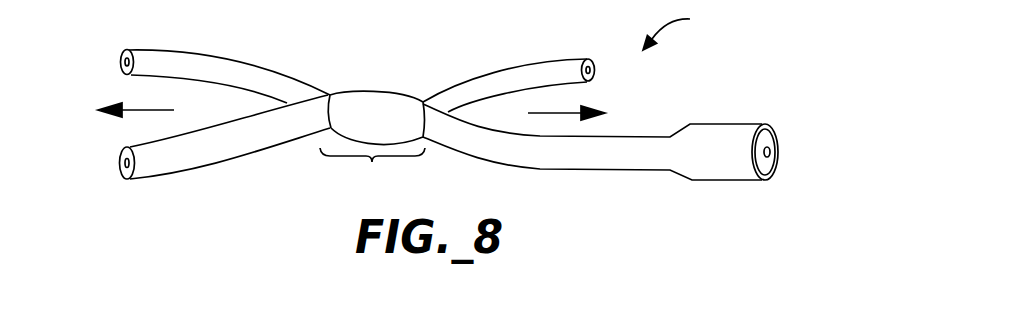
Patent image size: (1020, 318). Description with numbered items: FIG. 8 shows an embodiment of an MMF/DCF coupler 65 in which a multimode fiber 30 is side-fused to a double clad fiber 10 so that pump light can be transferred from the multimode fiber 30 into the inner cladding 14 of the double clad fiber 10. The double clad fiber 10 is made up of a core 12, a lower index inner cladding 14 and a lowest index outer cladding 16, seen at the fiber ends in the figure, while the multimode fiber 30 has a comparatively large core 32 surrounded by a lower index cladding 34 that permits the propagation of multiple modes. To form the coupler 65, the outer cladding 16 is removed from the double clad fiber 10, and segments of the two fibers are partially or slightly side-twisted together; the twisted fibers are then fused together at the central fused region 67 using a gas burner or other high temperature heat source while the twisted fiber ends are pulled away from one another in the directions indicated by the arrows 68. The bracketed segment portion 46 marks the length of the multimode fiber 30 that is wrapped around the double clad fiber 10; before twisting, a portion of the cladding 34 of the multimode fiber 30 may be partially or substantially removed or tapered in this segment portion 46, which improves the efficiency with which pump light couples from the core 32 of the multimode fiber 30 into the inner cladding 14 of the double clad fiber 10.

The double clad fiber 10 is at (203, 162).
The core 12 is at (121, 163).
The inner cladding 14 is at (121, 154).
The outer cladding 16 is at (770, 127).
The multimode fiber 30 is at (215, 63).
The core 32 is at (120, 62).
The cladding 34 is at (121, 56).
The segment portion 46 is at (372, 173).
The MMF/DCF coupler 65 is at (683, 27).
The fused region 67 is at (360, 92).
The arrows 68 is at (150, 110).